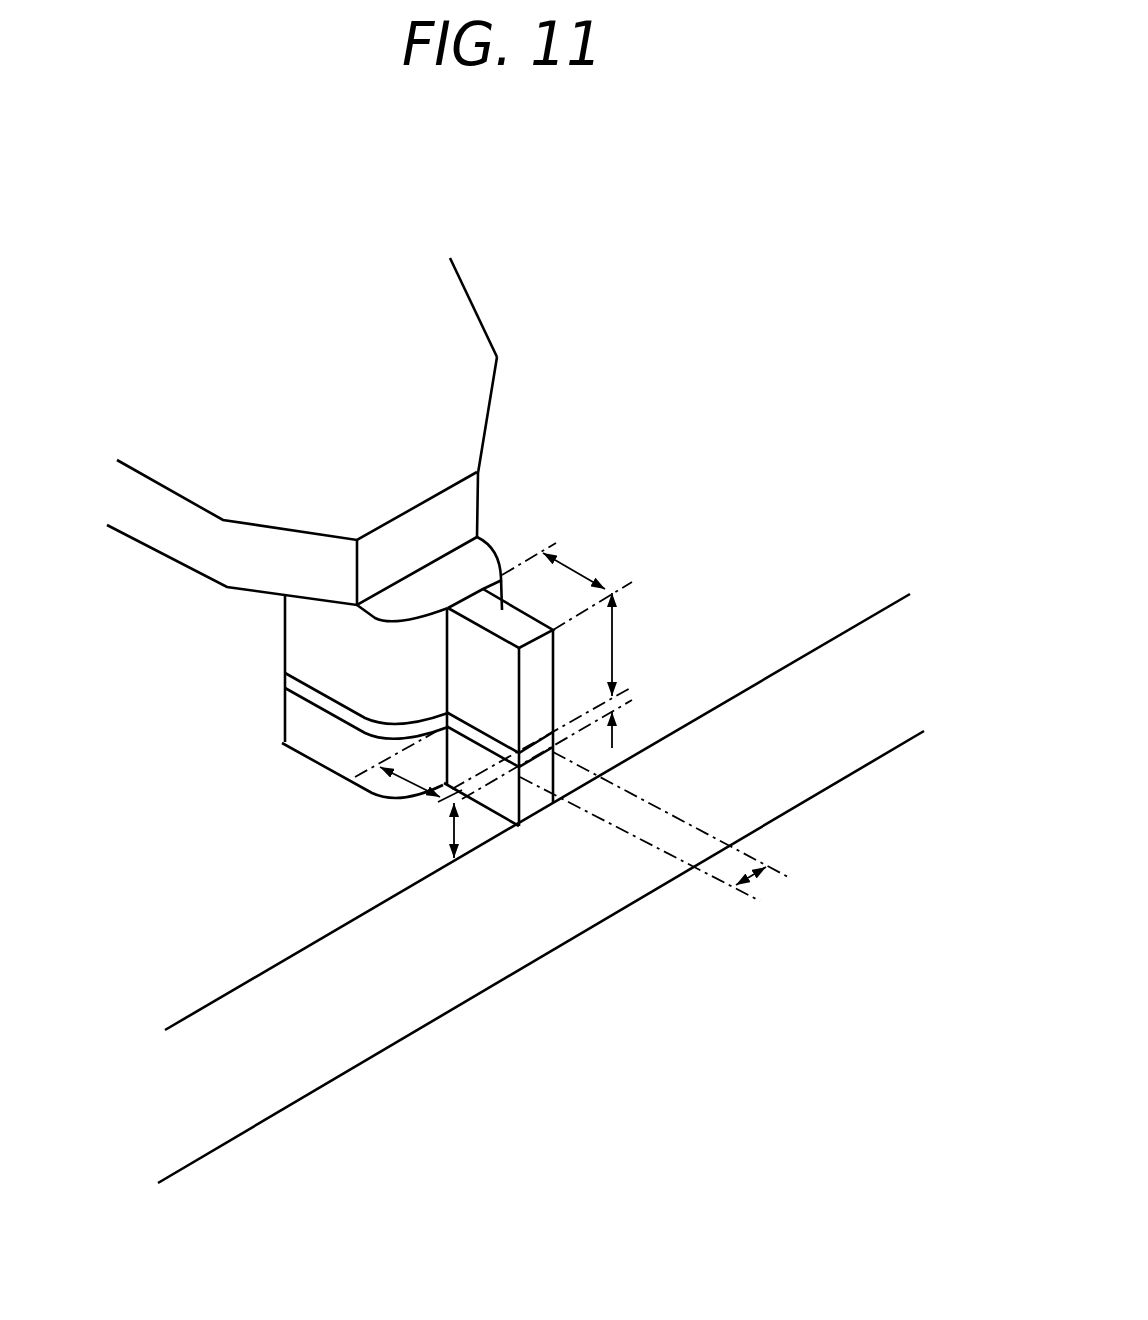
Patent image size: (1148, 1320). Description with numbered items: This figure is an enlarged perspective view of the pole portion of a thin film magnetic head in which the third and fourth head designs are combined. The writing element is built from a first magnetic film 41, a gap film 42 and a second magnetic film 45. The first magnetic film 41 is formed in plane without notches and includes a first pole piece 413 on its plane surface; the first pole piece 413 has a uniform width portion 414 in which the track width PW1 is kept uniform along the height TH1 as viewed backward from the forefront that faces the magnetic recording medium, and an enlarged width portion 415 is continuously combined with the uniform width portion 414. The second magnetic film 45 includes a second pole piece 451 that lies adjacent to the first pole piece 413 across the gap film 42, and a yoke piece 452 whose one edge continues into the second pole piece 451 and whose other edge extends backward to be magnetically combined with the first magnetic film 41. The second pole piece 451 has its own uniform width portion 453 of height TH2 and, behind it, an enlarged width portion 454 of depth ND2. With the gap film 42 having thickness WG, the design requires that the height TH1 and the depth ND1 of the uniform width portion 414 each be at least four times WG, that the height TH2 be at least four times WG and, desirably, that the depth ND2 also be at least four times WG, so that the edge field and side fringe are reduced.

The second magnetic film 45 is at (461, 261).
The yoke piece 452 is at (440, 372).
The second pole piece 451 is at (500, 533).
The uniform width portion 453 is at (503, 572).
The enlarged width portion 454 is at (305, 639).
The gap film 42 is at (283, 682).
The enlarged width portion 415 is at (290, 738).
The first magnetic film 41 is at (218, 1063).
The first pole piece 413 is at (588, 753).
The uniform width portion 414 is at (484, 793).
The height of uniform width portion TH2 is at (578, 570).
The depth of uniform width portion ND2 is at (613, 655).
The thickness of gap film WG is at (612, 705).
The height of uniform width portion TH1 is at (418, 783).
The depth of uniform width portion ND1 is at (453, 838).
The track width PW1 is at (752, 877).